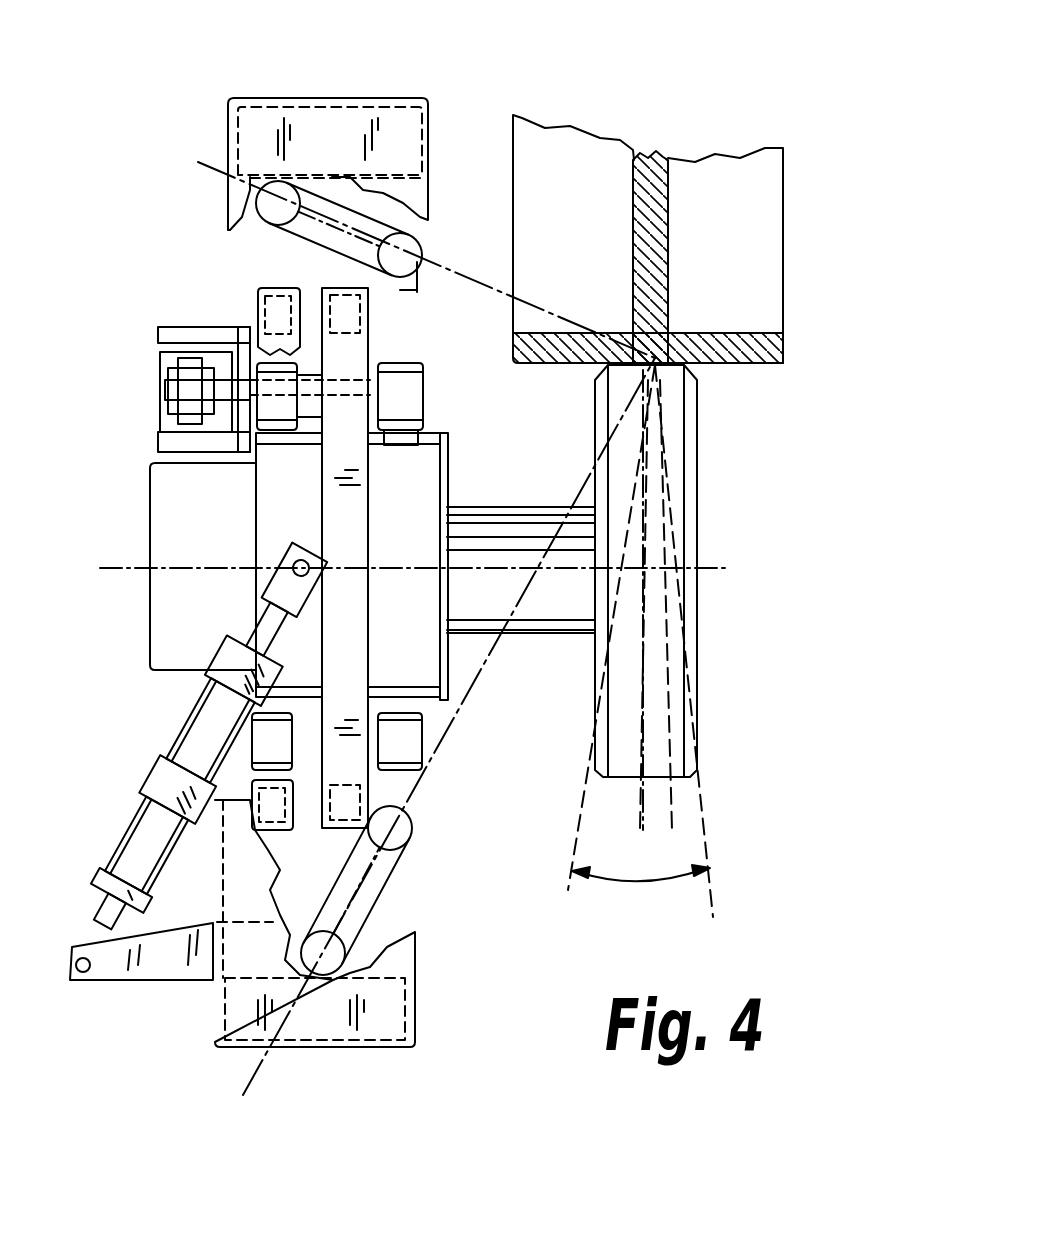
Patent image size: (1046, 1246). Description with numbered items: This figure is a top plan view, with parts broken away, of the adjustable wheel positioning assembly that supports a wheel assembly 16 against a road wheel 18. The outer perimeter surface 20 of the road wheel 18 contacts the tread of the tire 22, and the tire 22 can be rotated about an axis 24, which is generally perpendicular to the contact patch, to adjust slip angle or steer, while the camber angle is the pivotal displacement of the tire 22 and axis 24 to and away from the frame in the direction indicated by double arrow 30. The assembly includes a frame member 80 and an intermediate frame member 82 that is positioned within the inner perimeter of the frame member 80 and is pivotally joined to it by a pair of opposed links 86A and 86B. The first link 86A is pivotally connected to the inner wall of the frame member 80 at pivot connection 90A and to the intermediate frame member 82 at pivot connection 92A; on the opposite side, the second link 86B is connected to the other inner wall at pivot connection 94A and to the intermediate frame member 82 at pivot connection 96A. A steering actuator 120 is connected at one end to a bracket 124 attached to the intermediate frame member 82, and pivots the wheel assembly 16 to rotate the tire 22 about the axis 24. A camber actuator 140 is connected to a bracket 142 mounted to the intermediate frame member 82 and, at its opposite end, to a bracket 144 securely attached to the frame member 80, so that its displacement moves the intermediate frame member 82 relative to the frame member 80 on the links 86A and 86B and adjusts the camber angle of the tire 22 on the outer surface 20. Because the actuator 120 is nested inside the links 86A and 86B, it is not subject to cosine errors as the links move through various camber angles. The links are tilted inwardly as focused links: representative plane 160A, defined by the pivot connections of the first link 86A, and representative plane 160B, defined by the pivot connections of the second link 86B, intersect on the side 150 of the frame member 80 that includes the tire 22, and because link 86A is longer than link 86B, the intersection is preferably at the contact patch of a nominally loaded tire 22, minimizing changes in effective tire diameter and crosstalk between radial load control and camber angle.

The wheel assembly 16 is at (155, 680).
The road wheel 18 is at (790, 298).
The outer perimeter surface 20 is at (743, 367).
The tire 22 is at (697, 440).
The axis 24 is at (643, 695).
The double arrow 30 is at (636, 883).
The frame member 80 is at (278, 98).
The intermediate frame member 82 is at (330, 500).
The first link 86A is at (370, 897).
The second link 86B is at (327, 185).
The pivot connection 90A is at (333, 975).
The pivot connection 92A is at (408, 813).
The pivot connection 94A is at (265, 182).
The pivot connection 96A is at (420, 247).
The actuator 120 is at (157, 372).
The bracket 124 is at (193, 325).
The actuator 140 is at (128, 817).
The bracket 142 is at (300, 560).
The bracket 144 is at (127, 980).
The side 150 is at (661, 148).
The representative plane 160A is at (452, 715).
The representative plane 160B is at (545, 317).